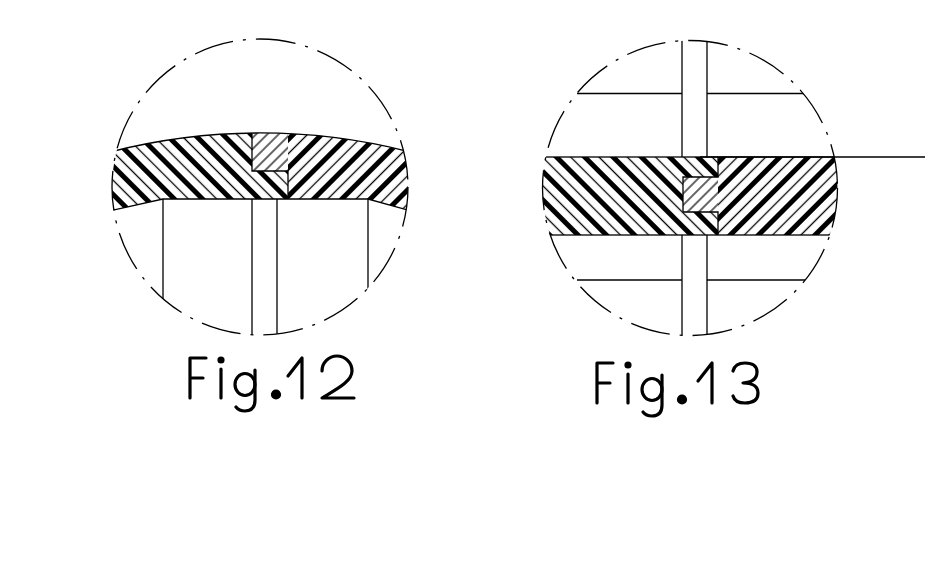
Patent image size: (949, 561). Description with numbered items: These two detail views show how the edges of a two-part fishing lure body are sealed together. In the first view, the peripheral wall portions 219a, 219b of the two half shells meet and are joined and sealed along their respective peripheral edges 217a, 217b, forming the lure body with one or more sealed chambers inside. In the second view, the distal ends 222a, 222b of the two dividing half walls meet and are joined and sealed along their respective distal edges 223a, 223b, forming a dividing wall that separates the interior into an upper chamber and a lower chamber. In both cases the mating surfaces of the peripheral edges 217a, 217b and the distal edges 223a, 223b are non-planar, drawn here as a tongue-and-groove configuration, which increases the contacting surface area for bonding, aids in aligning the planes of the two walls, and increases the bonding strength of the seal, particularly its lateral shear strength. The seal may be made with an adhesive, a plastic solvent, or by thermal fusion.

In FIG. 12, the peripheral wall portion 219a is at (188, 108).
In FIG. 12, the peripheral wall portion 219b is at (300, 96).
In FIG. 12, the peripheral edge 217a is at (303, 152).
In FIG. 12, the peripheral edge 217b is at (295, 176).
In FIG. 13, the distal end 222a is at (645, 124).
In FIG. 13, the distal end 222b is at (752, 124).
In FIG. 13, the distal edge 223a is at (720, 193).
In FIG. 13, the distal edge 223b is at (717, 212).